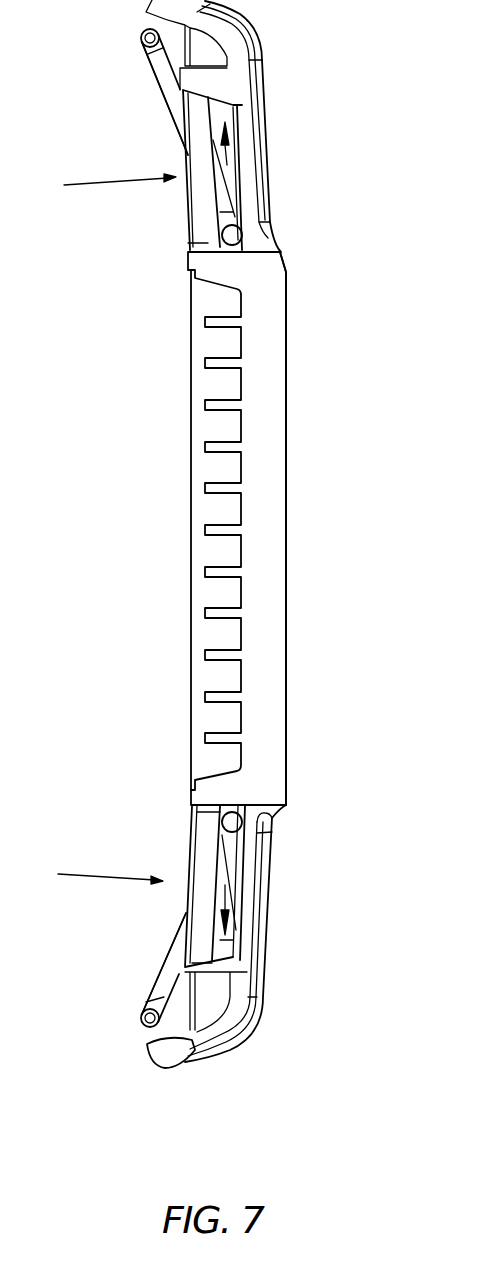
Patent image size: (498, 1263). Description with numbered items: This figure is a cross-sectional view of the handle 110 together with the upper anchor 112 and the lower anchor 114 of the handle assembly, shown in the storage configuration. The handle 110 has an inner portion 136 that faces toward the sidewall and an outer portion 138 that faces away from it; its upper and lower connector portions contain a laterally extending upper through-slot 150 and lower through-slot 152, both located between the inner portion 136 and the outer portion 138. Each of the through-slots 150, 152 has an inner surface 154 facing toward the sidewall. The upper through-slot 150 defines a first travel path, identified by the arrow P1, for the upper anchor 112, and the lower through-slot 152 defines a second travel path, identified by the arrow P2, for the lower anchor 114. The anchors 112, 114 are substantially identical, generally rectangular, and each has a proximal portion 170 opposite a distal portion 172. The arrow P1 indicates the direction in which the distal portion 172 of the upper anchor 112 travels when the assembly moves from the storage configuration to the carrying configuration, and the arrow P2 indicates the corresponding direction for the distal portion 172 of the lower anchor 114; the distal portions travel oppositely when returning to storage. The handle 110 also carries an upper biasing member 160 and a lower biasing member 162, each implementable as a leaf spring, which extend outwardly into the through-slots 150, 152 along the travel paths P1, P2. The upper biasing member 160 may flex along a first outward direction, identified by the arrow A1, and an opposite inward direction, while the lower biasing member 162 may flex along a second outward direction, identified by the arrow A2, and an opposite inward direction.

The handle 110 is at (286, 688).
The upper anchor 112 is at (167, 84).
The lower anchor 114 is at (160, 982).
The inner portion 136 is at (191, 417).
The outer portion 138 is at (288, 428).
The upper through-slot 150 is at (222, 106).
The lower through-slot 152 is at (235, 947).
The inner surface 154 is at (183, 122).
The upper biasing member 160 is at (207, 207).
The lower biasing member 162 is at (203, 832).
The proximal portion 170 is at (141, 34).
The distal portion 172 is at (241, 234).
The arrow identifying the first travel path P1 is at (228, 162).
The arrow identifying the second travel path P2 is at (229, 878).
The arrow identifying the first outward direction A1 is at (100, 187).
The arrow identifying the second outward direction A2 is at (95, 875).